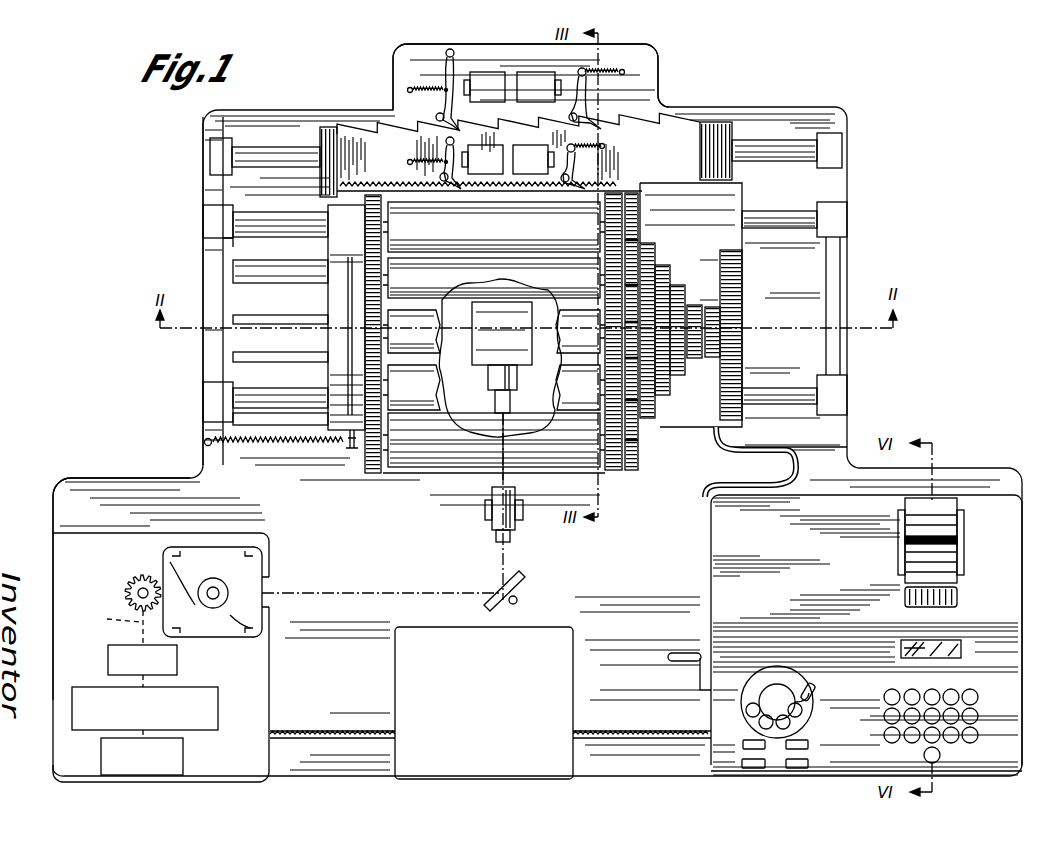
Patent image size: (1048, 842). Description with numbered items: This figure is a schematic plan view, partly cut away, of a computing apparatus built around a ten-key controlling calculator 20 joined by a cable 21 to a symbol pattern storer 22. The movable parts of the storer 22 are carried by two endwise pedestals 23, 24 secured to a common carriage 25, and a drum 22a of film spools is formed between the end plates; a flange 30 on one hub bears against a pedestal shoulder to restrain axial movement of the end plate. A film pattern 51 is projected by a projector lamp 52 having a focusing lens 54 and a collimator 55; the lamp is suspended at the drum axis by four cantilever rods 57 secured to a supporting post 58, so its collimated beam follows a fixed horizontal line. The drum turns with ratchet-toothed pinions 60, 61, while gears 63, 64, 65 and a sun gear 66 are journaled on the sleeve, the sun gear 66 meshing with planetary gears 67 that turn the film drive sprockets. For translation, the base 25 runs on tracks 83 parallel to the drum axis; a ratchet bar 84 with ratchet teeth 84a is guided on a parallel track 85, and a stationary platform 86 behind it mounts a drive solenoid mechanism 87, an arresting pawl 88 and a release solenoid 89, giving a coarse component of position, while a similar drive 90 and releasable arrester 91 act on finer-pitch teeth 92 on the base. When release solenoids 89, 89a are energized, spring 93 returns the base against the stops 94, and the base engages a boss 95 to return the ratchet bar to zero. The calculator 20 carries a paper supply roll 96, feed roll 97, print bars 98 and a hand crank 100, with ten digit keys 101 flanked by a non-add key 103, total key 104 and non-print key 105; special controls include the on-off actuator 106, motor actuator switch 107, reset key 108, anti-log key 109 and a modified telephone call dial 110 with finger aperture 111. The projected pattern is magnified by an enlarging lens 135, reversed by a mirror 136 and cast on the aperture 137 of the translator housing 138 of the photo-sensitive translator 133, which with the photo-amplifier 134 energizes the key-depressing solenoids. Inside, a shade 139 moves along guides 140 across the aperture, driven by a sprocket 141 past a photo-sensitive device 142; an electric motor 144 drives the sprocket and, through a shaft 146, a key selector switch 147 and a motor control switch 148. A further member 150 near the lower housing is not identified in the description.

The ten-key controlling calculator 20 is at (832, 776).
The cable 21 is at (798, 462).
The symbol pattern storer 22 is at (352, 464).
The drum 22a is at (428, 480).
The pedestal 23 is at (732, 296).
The pedestal 24 is at (335, 280).
The carriage 25 is at (736, 196).
The flange 30 is at (352, 280).
The film pattern 51 is at (504, 466).
The projector lamp 52 is at (500, 316).
The focusing lens 54 is at (490, 378).
The collimator 55 is at (497, 401).
The cantilever rods 57 is at (258, 355).
The supporting post 58 is at (207, 271).
The pinion 60 is at (710, 308).
The pinion 61 is at (692, 360).
The gear 63 is at (680, 292).
The gear 64 is at (670, 276).
The gear 65 is at (656, 252).
The sun gear 66 is at (620, 262).
The planetary gears 67 is at (636, 210).
The tracks 83 is at (784, 212).
The ratchet bar 84 is at (716, 132).
The ratchet teeth 84a is at (372, 126).
The track 85 is at (780, 142).
The stationary platform 86 is at (658, 66).
The drive solenoid mechanism 87 is at (442, 70).
The arresting pawl 88 is at (600, 108).
The release solenoid 89 is at (535, 80).
The release solenoid 89a is at (524, 150).
The drive 90 is at (440, 151).
The releasable arrester 91 is at (586, 155).
The teeth 92 is at (422, 184).
The spring 93 is at (275, 452).
The stops 94 is at (235, 213).
The boss 95 is at (323, 198).
The paper supply roll 96 is at (936, 500).
The feed roll 97 is at (908, 564).
The print bars 98 is at (960, 598).
The hand crank 100 is at (678, 652).
The digit keys 101 is at (931, 690).
The non-add key 103 is at (979, 714).
The total key 104 is at (977, 741).
The non-print key 105 is at (883, 697).
The actuator 106 is at (741, 744).
The motor actuator switch 107 is at (740, 769).
The reset key 108 is at (788, 769).
The anti-log key 109 is at (809, 745).
The modified telephone call dial 110 is at (806, 690).
The aperture 111 is at (748, 716).
The photo-sensitive translator 133 is at (273, 538).
The photo-amplifier 134 is at (574, 656).
The enlarging lens 135 is at (490, 525).
The mirror 136 is at (522, 584).
The aperture 137 is at (280, 592).
The translator housing 138 is at (95, 531).
The shade 139 is at (207, 637).
The guides 140 is at (195, 612).
The sprocket 141 is at (126, 590).
The photo-sensitive device 142 is at (215, 588).
The electric motor 144 is at (108, 648).
The shaft 146 is at (107, 673).
The key selector switch 147 is at (182, 690).
The motor control switch 148 is at (184, 758).
The rack 150 is at (323, 732).